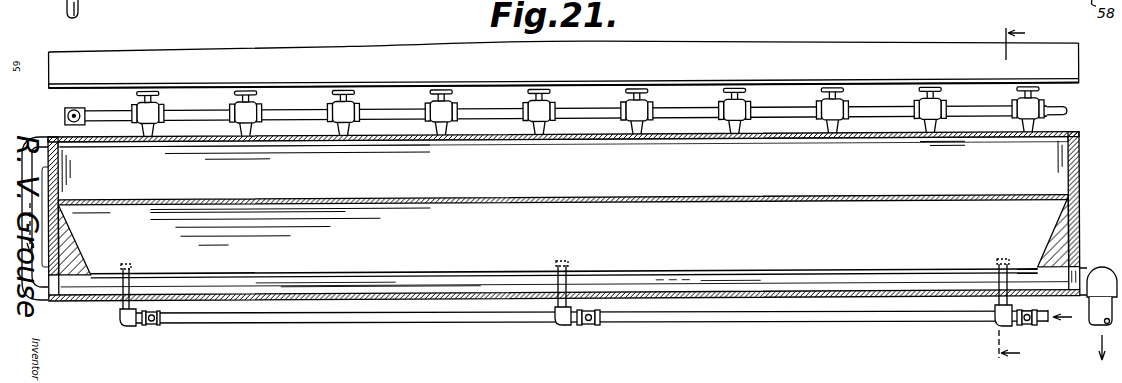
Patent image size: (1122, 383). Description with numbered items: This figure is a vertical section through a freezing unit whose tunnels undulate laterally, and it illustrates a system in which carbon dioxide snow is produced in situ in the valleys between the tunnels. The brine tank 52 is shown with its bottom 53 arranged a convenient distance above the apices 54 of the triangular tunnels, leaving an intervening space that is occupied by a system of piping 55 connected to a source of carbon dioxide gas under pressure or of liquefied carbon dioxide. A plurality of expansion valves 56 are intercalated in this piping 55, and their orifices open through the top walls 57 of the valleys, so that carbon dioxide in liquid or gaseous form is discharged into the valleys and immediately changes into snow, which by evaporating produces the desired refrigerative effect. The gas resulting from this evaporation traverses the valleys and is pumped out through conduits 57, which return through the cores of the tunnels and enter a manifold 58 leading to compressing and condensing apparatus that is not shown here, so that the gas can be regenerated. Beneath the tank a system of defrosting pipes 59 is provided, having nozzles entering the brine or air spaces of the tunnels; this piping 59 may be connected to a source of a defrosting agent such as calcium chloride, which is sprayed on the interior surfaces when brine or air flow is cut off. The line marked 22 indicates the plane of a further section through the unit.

The section line 22- 22 is at (1026, 192).
The tank 52 is at (1047, 151).
The bottom of the brine tank 53 is at (777, 82).
The apices of the triangular tunnels 54 is at (657, 135).
The system of piping 55 is at (98, 109).
The expansion valves 56 is at (430, 105).
The conduits 57 is at (45, 296).
The manifold 58 is at (1103, 277).
The defrosting pipes 59 is at (504, 322).